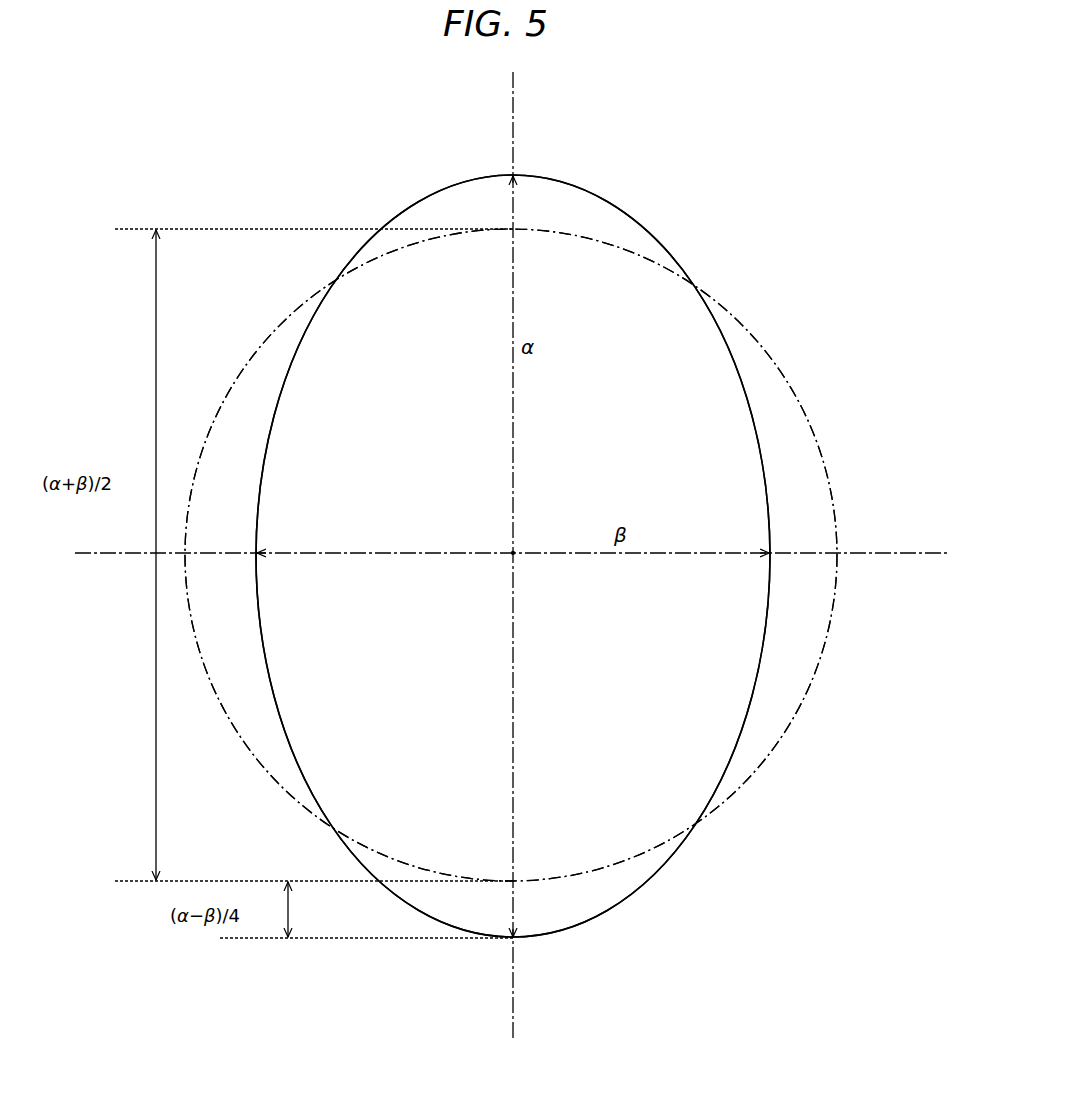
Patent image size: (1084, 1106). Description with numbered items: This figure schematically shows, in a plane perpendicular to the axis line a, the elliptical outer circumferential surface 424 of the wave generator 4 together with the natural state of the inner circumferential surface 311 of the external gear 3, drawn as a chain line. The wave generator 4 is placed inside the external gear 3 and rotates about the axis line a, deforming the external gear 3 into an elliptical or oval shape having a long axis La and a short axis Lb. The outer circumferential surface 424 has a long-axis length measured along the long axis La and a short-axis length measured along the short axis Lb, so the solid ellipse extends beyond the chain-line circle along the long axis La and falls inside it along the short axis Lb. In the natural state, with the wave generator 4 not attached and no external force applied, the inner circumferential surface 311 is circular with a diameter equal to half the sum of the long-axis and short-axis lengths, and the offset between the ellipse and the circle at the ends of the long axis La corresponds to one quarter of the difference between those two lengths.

The external gear 3 is at (783, 363).
The inner circumferential surface 311 is at (748, 330).
The wave generator 4 is at (661, 229).
The outer circumferential surface 424 is at (612, 198).
The axis line a is at (513, 553).
The long axis La is at (513, 117).
The short axis Lb is at (928, 550).